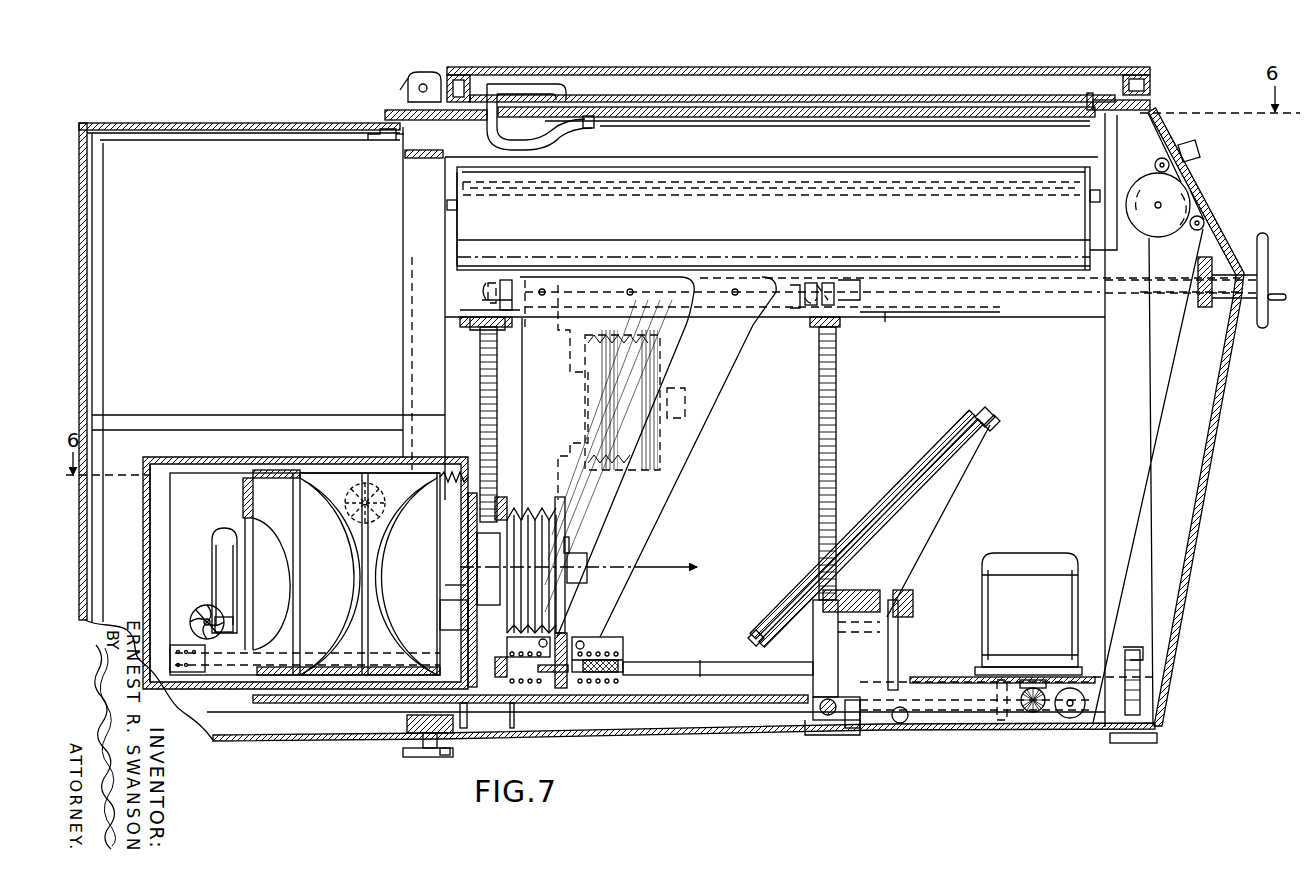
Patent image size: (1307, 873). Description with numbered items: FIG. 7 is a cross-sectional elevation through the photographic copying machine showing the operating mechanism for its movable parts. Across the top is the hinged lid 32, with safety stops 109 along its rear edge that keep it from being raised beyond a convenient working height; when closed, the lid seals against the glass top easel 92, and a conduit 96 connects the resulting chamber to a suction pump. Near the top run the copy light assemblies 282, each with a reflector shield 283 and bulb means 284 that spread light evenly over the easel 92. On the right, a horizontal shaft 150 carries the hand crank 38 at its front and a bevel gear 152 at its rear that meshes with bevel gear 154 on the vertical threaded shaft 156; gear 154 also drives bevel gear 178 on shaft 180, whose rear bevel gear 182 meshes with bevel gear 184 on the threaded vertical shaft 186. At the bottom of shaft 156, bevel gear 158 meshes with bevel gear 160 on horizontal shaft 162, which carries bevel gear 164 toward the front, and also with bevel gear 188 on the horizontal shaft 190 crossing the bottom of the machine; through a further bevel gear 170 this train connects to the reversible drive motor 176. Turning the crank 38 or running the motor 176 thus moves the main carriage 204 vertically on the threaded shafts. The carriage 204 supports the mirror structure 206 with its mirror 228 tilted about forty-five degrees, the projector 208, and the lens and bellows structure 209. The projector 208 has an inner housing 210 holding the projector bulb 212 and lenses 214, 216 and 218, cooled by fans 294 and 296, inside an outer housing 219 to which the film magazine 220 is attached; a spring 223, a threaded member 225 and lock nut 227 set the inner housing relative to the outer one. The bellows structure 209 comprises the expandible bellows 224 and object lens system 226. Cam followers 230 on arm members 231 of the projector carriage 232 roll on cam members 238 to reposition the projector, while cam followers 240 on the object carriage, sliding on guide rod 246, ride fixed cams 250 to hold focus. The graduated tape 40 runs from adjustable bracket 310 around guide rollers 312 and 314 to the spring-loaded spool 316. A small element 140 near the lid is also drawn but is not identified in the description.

The lid 32 is at (793, 67).
The hand crank 38 is at (1262, 238).
The graduated tape 40 is at (1165, 373).
The glass top easel 92 is at (808, 118).
The conduit 96 is at (622, 122).
The safety stops 109 is at (404, 85).
The latch 140 is at (370, 150).
The horizontal shaft 150 is at (1005, 300).
The bevel gear 152 is at (868, 281).
The bevel gear 154 is at (831, 285).
The vertical threaded shaft 156 is at (840, 407).
The bevel gear 158 is at (790, 704).
The bevel gear 160 is at (851, 740).
The horizontal shaft 162 is at (930, 739).
The bevel gear 164 is at (1028, 713).
The bevel gear 170 is at (1060, 720).
The drive motor 176 is at (1015, 580).
The bevel gear 178 is at (812, 284).
The shaft 180 is at (505, 288).
The bevel gear 182 is at (490, 283).
The bevel gear 184 is at (480, 303).
The threaded vertical shaft 186 is at (497, 400).
The bevel gear 188 is at (800, 740).
The horizontal shaft 190 is at (828, 717).
The main carriage 204 is at (680, 704).
The mirror structure 206 is at (962, 500).
The projector 208 is at (300, 455).
The lens and bellows structure 209 is at (605, 318).
The inner housing 210 is at (337, 470).
The projector bulb 212 is at (215, 530).
The lens 214 is at (265, 528).
The lens 216 is at (340, 556).
The lens 218 is at (416, 549).
The outer housing 219 is at (175, 458).
The film magazine 220 is at (468, 585).
The spring 223 is at (442, 475).
The expandible bellows 224 is at (527, 510).
The member 225 is at (433, 642).
The object lens system 226 is at (690, 400).
The lock nut 227 is at (558, 686).
The mirror 228 is at (925, 470).
The cam follower members 230 is at (605, 636).
The arm members 231 is at (623, 639).
The projector carriage 232 is at (263, 690).
The cam members 238 is at (740, 346).
The cam follower members 240 is at (600, 613).
The guide rod 246 is at (710, 660).
The fixed cam members 250 is at (688, 329).
The copy light assembly 282 is at (926, 164).
The reflector shield 283 is at (460, 227).
The bulb means 284 is at (640, 190).
The fan 294 is at (200, 603).
The fan 296 is at (368, 481).
The adjustable bracket 310 is at (900, 643).
The guide roller 312 is at (1192, 210).
The guide roller 314 is at (1166, 158).
The spool 316 is at (1172, 232).